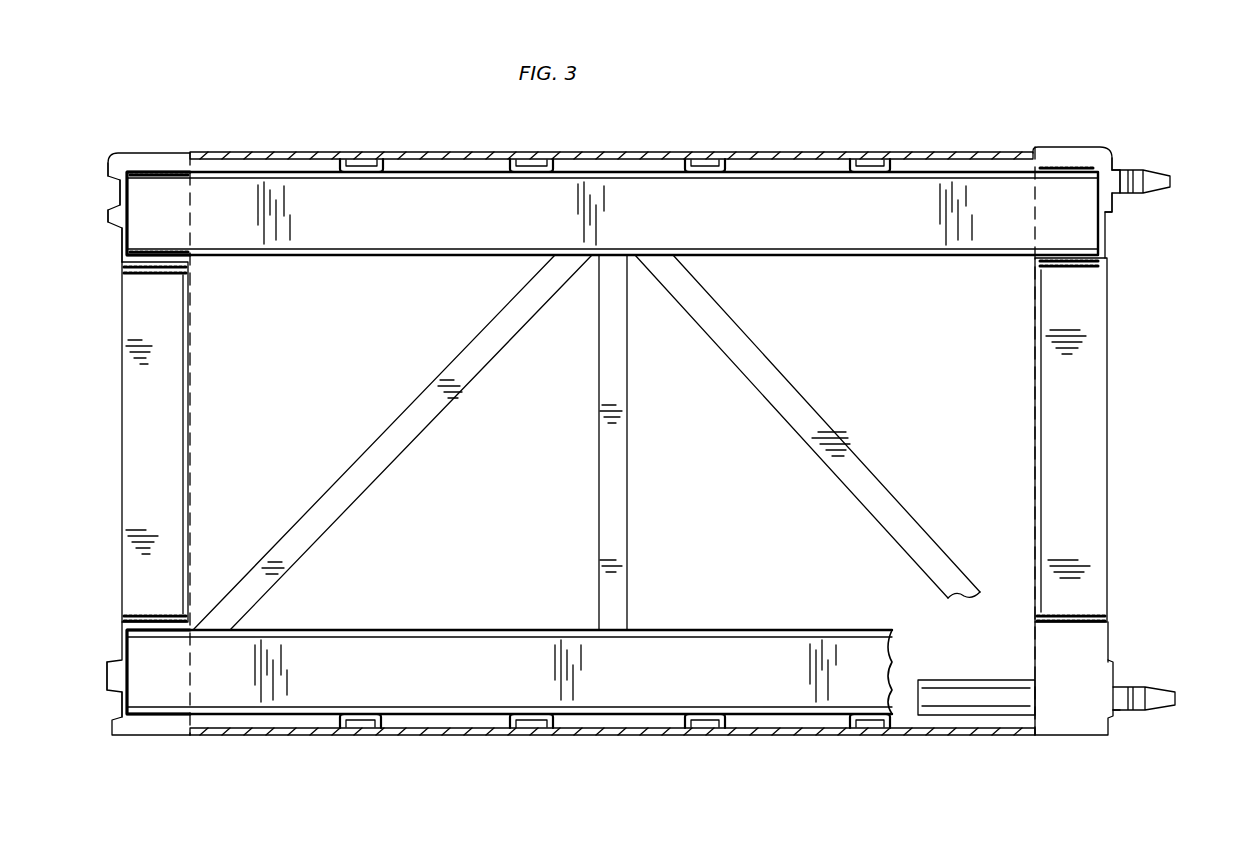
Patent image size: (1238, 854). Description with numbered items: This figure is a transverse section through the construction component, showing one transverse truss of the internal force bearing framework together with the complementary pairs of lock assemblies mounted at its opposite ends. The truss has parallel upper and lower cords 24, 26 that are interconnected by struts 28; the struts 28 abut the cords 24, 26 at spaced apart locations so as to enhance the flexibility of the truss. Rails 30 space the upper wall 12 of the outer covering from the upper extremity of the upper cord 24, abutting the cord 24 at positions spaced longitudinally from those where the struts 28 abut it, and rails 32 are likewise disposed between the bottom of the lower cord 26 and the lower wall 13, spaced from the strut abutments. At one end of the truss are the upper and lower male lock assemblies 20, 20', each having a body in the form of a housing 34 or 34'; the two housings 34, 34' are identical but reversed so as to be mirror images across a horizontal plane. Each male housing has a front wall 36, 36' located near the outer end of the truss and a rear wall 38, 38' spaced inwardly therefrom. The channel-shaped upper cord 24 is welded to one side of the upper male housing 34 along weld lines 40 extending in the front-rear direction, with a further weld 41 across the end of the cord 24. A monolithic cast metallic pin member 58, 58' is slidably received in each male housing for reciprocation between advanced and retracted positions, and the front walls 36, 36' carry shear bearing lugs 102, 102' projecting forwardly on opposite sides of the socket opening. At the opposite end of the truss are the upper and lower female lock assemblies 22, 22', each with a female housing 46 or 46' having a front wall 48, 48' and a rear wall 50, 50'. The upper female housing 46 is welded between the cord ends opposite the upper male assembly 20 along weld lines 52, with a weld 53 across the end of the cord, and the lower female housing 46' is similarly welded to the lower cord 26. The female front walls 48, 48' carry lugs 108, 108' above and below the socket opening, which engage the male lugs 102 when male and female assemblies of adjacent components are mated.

The upper wall 12 is at (468, 152).
The lower wall 13 is at (742, 736).
The upper male lock assembly 20 is at (1161, 143).
The lower male lock assembly 20' is at (1160, 650).
The upper female lock assembly 22 is at (82, 198).
The lower female lock assembly 22' is at (75, 663).
The upper cord 24 is at (872, 240).
The lower cord 26 is at (682, 660).
The struts 28 is at (372, 455).
The rails 30 is at (373, 160).
The rails 32 is at (381, 730).
The housing 34 is at (1076, 174).
The housing 34' is at (1074, 703).
The front wall 36 is at (1105, 425).
The front wall 36' is at (1102, 611).
The rear wall 38 is at (1040, 134).
The rear wall 38' is at (976, 670).
The weld lines 40 is at (1070, 166).
The weld 41 is at (1114, 212).
The female housing 46 is at (149, 181).
The female housing 46' is at (148, 706).
The front wall 48 is at (128, 440).
The front wall 48' is at (129, 605).
The rear wall 50 is at (188, 239).
The rear wall 50' is at (176, 710).
The weld lines 52 is at (147, 172).
The weld 53 is at (118, 240).
The pin member 58 is at (1170, 182).
The pin member 58' is at (1175, 690).
The shear bearing lugs 102 is at (1138, 139).
The shear bearing lugs 102' is at (1150, 734).
The lugs 108 is at (75, 199).
The lugs 108' is at (80, 707).